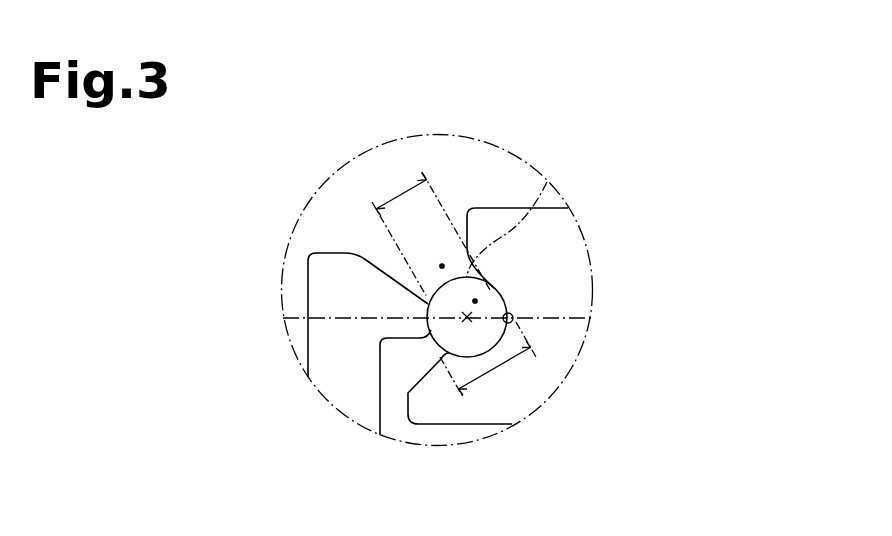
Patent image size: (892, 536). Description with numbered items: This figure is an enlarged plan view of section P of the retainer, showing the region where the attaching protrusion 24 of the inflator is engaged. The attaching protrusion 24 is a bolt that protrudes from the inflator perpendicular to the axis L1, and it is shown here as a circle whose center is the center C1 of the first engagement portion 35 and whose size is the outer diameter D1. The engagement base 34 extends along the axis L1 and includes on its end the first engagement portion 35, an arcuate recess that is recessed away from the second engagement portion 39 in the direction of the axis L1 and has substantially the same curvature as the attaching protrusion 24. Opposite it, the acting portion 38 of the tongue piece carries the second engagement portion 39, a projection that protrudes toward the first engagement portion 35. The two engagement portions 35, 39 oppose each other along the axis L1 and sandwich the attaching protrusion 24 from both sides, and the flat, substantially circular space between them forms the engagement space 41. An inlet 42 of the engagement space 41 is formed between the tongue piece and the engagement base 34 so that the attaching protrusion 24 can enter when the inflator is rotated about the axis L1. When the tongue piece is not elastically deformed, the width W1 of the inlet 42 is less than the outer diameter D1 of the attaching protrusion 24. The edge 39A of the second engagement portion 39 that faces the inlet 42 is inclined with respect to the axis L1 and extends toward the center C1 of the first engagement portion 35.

The section P is at (312, 201).
The width of the inlet W1 is at (402, 189).
The attaching protrusion 24 is at (546, 181).
The inlet 42 is at (442, 265).
The edge of the second engagement portion 39A is at (407, 278).
The engagement base 34 is at (577, 248).
The engagement space 41 is at (475, 301).
The center of the first engagement portion C1 is at (466, 316).
The first engagement portion 35 is at (513, 317).
The axis L1 is at (591, 318).
The second engagement portion 39 is at (398, 330).
The outer diameter of the attaching protrusion D1 is at (491, 368).
The acting portion 38 is at (332, 390).